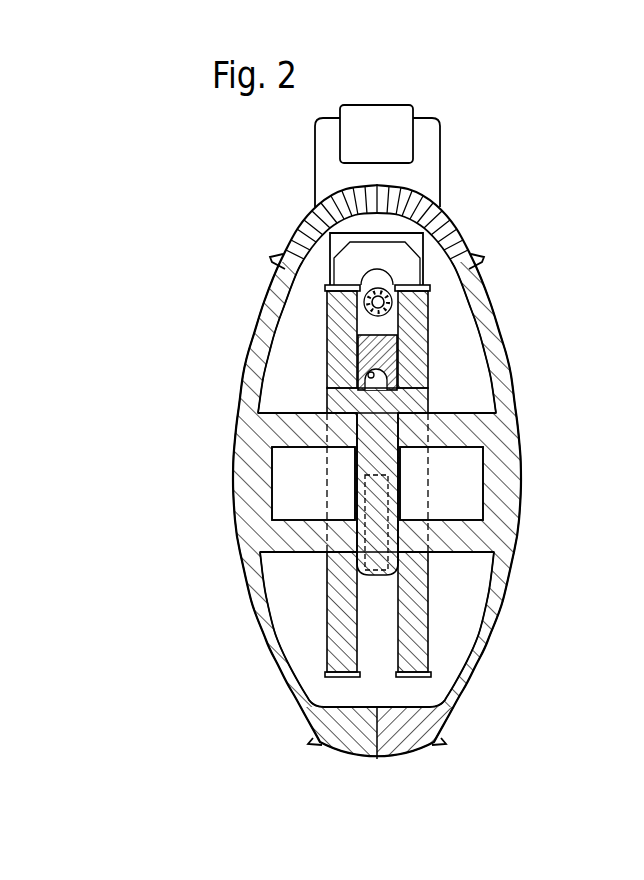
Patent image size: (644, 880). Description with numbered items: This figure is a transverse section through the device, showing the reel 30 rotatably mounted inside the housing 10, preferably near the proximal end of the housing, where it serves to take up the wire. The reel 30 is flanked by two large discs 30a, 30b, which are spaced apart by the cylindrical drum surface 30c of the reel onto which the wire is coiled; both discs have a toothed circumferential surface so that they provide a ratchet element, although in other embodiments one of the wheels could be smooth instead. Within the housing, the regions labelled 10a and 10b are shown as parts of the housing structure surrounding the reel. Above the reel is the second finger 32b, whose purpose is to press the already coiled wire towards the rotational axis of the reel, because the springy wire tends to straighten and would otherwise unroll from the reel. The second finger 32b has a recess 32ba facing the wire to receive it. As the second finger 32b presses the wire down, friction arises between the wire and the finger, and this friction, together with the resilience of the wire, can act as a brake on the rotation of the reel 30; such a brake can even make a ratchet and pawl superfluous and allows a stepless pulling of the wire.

The housing 10 is at (498, 322).
The partition wall of housing 10a is at (452, 416).
The lower chamber of housing 10b is at (298, 553).
The reel 30 is at (436, 560).
The disc 30a is at (424, 647).
The disc 30b is at (335, 652).
The cylindrical drum surface 30c is at (372, 575).
The second finger 32b is at (350, 312).
The recess 32ba is at (346, 385).